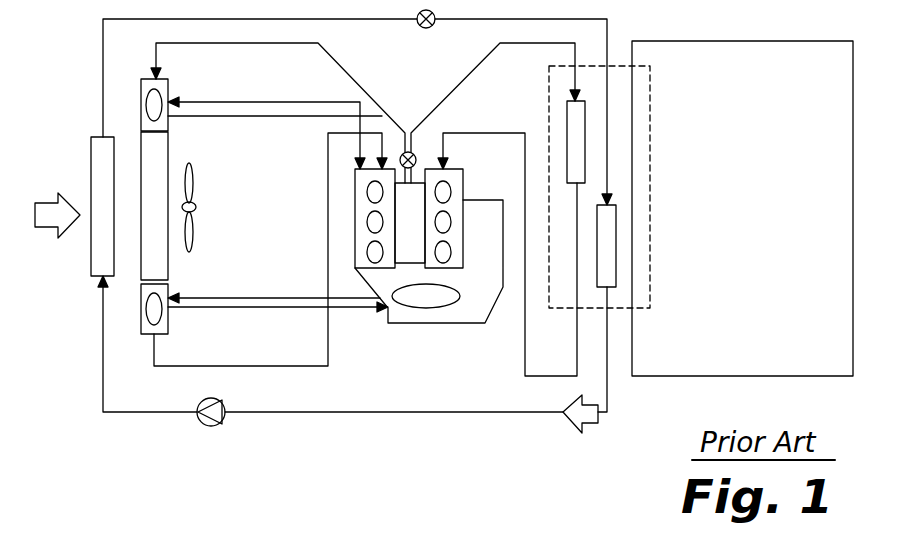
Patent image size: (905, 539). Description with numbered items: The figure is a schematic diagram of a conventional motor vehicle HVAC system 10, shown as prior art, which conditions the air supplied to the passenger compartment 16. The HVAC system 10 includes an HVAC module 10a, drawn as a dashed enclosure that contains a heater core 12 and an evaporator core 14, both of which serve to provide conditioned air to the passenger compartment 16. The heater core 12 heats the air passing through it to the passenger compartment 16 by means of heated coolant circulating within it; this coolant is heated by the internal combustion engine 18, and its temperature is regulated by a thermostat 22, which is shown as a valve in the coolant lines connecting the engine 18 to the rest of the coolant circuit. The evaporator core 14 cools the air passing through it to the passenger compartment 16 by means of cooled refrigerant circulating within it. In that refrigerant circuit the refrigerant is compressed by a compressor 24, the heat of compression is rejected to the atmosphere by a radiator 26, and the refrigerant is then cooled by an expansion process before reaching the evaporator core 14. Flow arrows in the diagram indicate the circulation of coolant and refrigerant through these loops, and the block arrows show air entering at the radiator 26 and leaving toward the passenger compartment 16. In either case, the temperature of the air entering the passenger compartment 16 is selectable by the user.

The HVAC system 10 is at (673, 94).
The HVAC module 10a is at (660, 270).
The heater core 12 is at (585, 133).
The evaporator core 14 is at (616, 243).
The passenger compartment 16 is at (705, 378).
The internal combustion engine 18 is at (355, 226).
The thermostat 22 is at (414, 148).
The compressor 24 is at (212, 425).
The radiator 26 is at (91, 253).